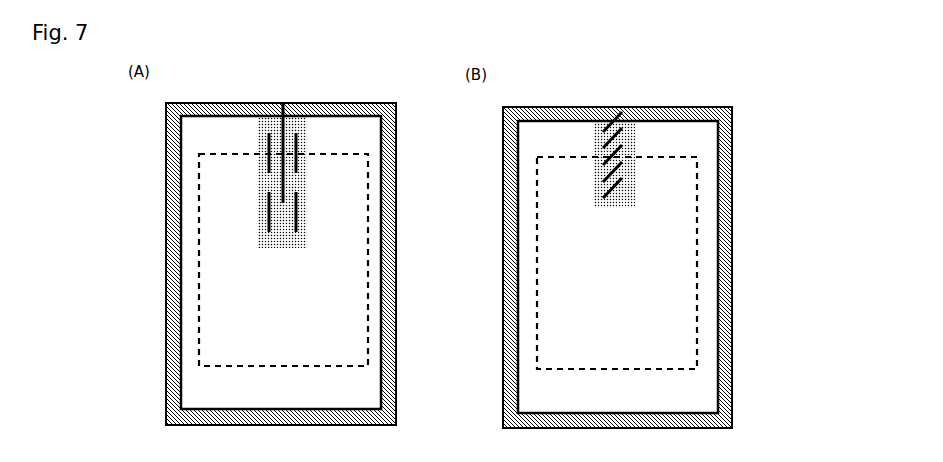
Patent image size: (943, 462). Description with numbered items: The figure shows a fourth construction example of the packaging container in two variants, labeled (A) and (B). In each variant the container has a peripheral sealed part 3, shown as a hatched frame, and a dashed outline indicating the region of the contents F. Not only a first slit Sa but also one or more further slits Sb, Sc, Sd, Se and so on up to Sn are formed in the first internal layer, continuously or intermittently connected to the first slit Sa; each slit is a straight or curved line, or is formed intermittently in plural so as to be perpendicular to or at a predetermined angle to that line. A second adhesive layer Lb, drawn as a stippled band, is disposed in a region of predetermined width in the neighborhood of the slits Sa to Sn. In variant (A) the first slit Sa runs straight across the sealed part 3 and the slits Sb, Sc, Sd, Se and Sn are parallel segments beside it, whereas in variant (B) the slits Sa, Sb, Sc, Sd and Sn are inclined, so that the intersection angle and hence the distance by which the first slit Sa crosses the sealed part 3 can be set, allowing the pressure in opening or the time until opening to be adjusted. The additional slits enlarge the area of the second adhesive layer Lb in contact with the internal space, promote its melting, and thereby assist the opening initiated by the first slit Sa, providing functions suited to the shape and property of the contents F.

The sealed part 3 is at (395, 240).
The contents F is at (262, 367).
The second adhesive layer Lb is at (258, 186).
The first slit Sa is at (287, 117).
The slit Sb is at (272, 145).
The slit Sc is at (282, 155).
The slit Sd is at (290, 168).
The slit Se is at (297, 213).
The slit Sn is at (272, 220).